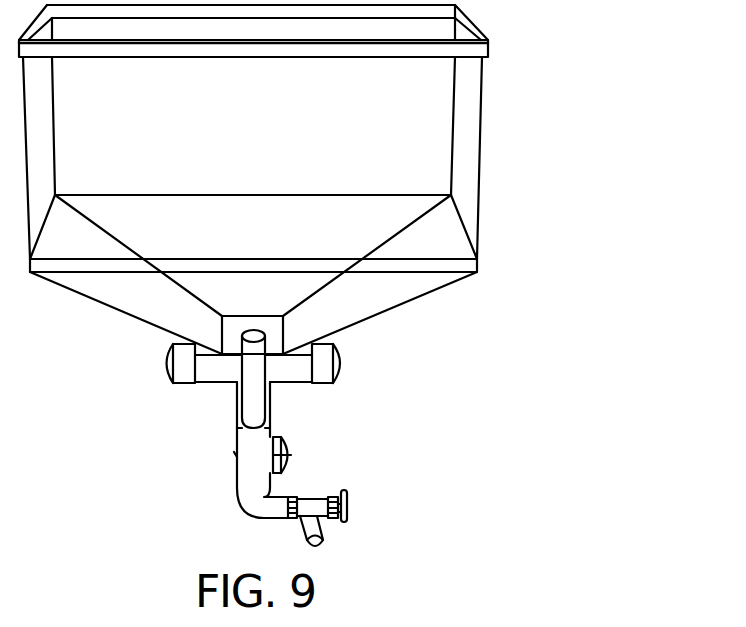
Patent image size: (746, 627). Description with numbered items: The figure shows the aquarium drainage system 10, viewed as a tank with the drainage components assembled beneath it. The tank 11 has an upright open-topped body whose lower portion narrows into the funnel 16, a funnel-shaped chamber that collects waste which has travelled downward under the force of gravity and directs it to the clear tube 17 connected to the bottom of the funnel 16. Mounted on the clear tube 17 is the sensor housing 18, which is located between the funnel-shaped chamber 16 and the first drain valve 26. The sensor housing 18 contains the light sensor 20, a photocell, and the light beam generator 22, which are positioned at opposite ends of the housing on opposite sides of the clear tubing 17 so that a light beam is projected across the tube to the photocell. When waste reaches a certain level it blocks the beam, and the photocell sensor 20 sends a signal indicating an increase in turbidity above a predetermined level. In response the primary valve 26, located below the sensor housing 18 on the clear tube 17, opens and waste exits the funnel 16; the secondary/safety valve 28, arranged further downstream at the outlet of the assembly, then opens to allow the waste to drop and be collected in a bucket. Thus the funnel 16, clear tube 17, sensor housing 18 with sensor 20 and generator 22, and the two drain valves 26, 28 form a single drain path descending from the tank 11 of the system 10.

The aquarium drainage system 10 is at (329, 275).
The tank 11 is at (477, 153).
The funnel 16 is at (388, 300).
The clear tube 17 is at (270, 405).
The sensor housing 18 is at (218, 385).
The light sensor 20 is at (160, 363).
The light beam generator 22 is at (345, 358).
The primary valve 26 is at (293, 443).
The secondary/safety valve 28 is at (347, 499).